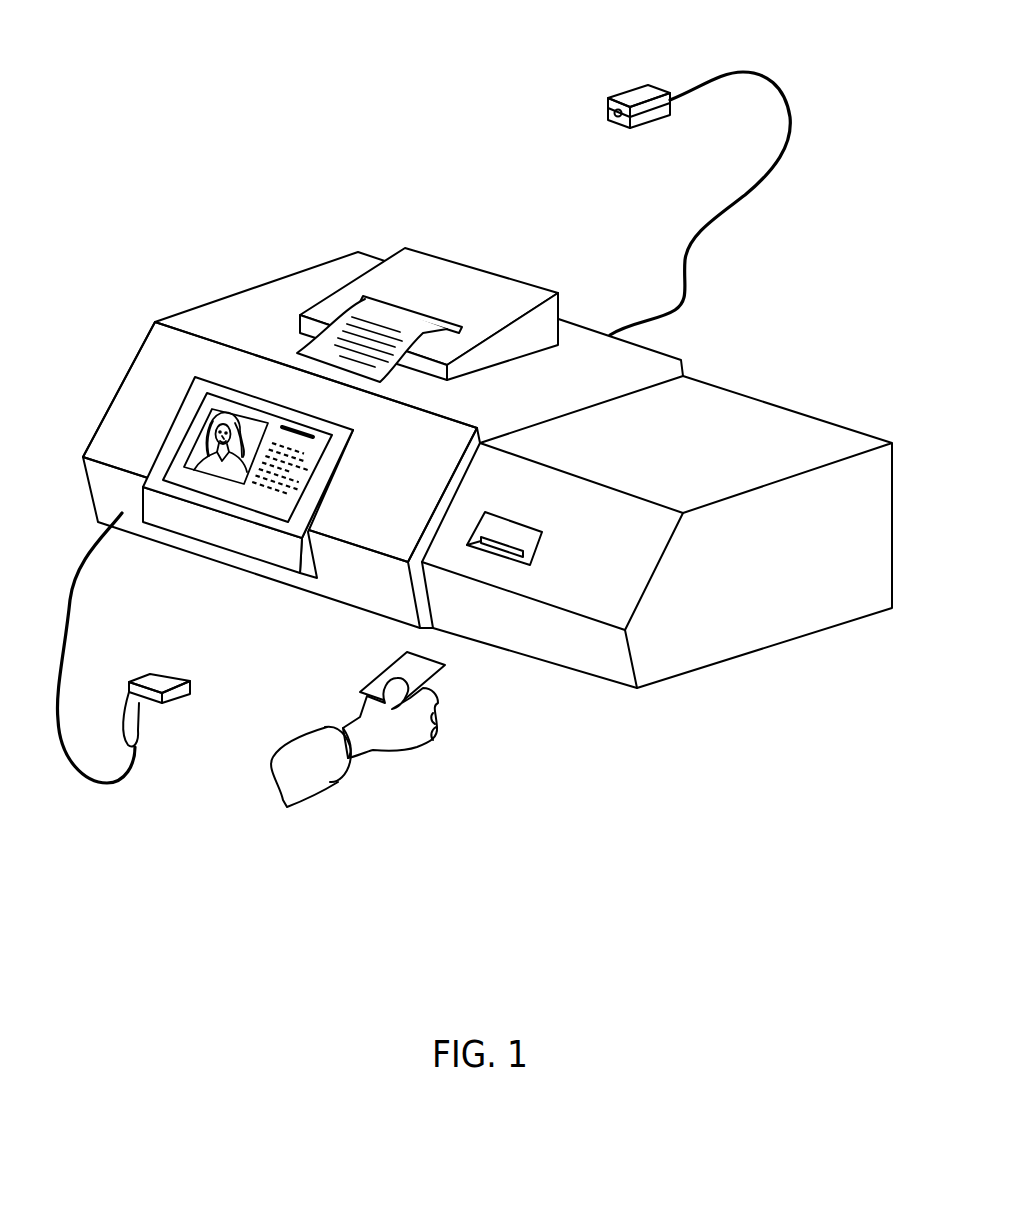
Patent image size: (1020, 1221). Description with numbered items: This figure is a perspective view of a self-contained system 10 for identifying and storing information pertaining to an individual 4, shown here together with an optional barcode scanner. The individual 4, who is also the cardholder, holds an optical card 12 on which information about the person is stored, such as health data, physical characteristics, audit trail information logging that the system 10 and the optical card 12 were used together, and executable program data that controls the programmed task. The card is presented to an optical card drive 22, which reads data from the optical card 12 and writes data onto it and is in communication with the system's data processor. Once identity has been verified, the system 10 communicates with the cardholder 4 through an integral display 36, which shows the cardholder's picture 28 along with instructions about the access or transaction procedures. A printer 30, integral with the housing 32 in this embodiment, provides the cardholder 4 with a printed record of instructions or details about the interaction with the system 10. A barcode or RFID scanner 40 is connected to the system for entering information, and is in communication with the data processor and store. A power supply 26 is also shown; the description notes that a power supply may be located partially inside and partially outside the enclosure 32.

The self-contained system 10 is at (166, 276).
The optical card 12 is at (437, 678).
The optical card drive 22 is at (545, 545).
The power supply adapter 26 is at (640, 87).
The cardholder's picture 28 is at (195, 437).
The printer 30 is at (438, 250).
The housing 32 is at (428, 474).
The integral display 36 is at (281, 519).
The barcode or RFID scanner 40 is at (163, 678).
The individual 4 is at (382, 739).